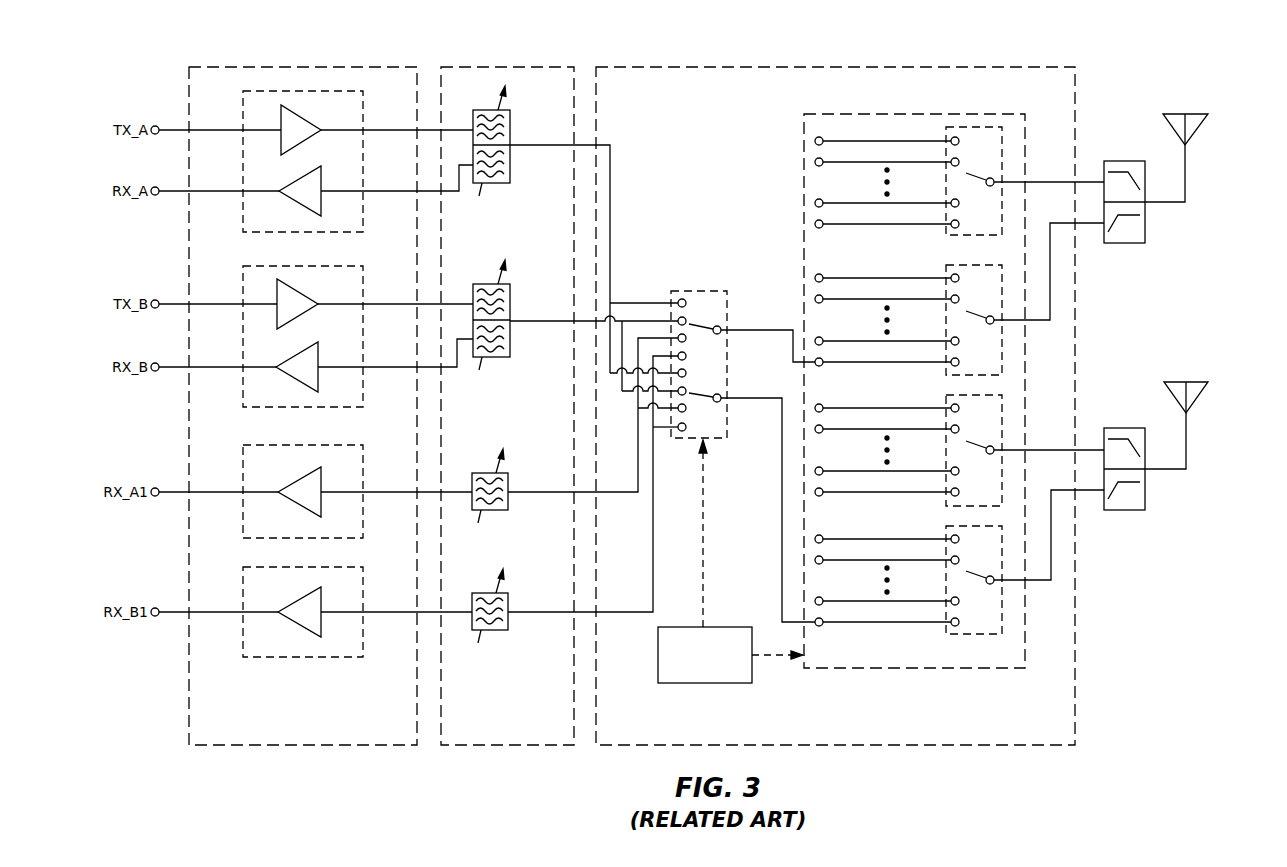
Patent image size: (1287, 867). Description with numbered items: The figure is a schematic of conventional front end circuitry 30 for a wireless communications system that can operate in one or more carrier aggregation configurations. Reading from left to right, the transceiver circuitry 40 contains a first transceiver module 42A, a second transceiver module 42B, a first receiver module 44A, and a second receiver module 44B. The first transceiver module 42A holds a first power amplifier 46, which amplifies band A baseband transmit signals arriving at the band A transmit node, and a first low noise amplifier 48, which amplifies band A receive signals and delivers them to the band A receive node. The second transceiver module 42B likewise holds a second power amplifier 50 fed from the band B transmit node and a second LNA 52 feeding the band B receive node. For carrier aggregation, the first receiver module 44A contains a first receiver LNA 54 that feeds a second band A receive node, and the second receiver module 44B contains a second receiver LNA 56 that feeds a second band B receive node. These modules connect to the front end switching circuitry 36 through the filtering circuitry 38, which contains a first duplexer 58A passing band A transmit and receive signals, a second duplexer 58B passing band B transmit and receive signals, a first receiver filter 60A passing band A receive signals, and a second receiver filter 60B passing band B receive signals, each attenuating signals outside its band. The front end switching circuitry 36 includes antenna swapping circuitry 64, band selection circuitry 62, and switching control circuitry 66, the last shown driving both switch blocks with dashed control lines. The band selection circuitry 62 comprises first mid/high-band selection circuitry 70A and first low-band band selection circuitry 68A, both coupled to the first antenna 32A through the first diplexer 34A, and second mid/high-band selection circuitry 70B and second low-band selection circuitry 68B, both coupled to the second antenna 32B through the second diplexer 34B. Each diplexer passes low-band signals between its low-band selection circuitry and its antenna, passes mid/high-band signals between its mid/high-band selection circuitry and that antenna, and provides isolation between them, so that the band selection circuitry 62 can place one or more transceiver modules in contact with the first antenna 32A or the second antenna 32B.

The conventional front end circuitry 30 is at (862, 29).
The first antenna 32A is at (1197, 110).
The second antenna 32B is at (1198, 378).
The first diplexer 34A is at (1125, 243).
The second diplexer 34B is at (1125, 510).
The front end switching circuitry 36 is at (835, 406).
The filtering circuitry 38 is at (507, 406).
The transceiver circuitry 40 is at (303, 406).
The first transceiver module 42A is at (327, 233).
The second transceiver module 42B is at (327, 408).
The first receiver module 44A is at (322, 539).
The second receiver module 44B is at (318, 658).
The first power amplifier 46 is at (306, 118).
The first low noise amplifier 48 is at (295, 178).
The second power amplifier 50 is at (303, 292).
The second LNA 52 is at (292, 356).
The first receiver LNA 54 is at (297, 479).
The second receiver LNA 56 is at (297, 598).
The first duplexer 58A is at (502, 183).
The second duplexer 58B is at (502, 357).
The first receiver filter 60A is at (500, 510).
The second receiver filter 60B is at (500, 630).
The band selection circuitry 62 is at (900, 114).
The antenna swapping circuitry 64 is at (700, 291).
The switching control circuitry 66 is at (727, 627).
The first low-band band selection circuitry 68A is at (965, 376).
The second low-band selection circuitry 68B is at (965, 636).
The first mid/high-band selection circuitry 70A is at (965, 237).
The second mid/high-band selection circuitry 70B is at (965, 507).